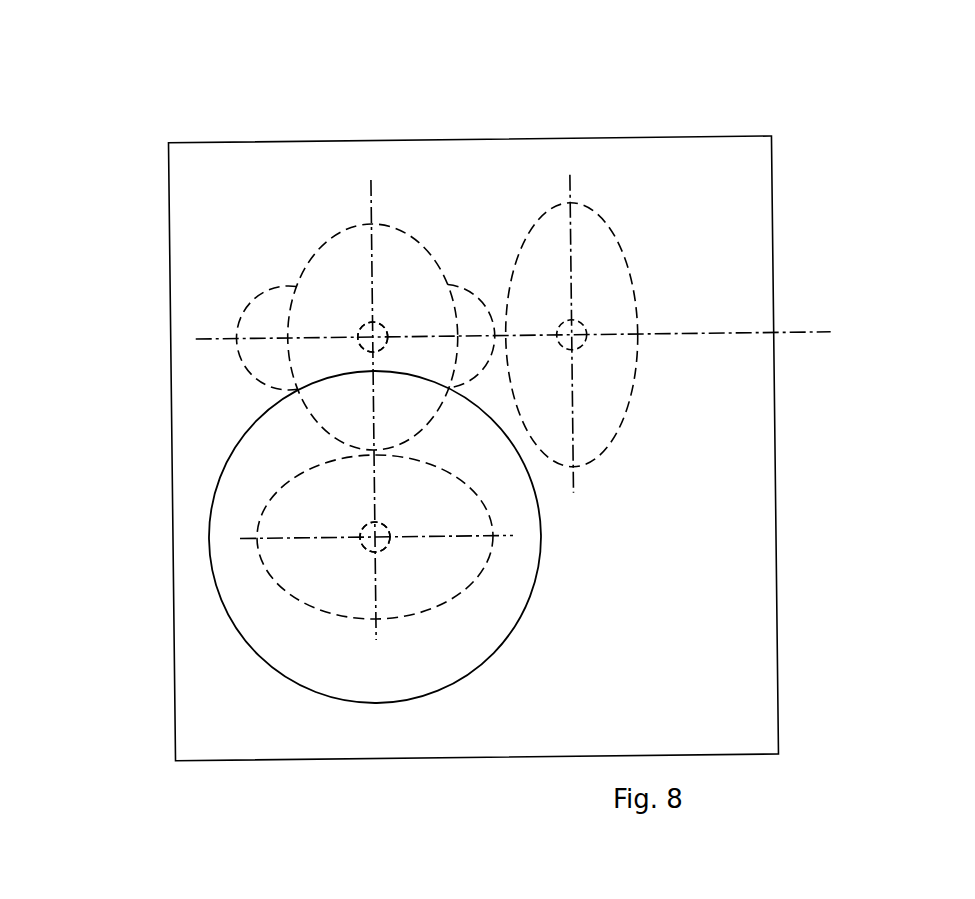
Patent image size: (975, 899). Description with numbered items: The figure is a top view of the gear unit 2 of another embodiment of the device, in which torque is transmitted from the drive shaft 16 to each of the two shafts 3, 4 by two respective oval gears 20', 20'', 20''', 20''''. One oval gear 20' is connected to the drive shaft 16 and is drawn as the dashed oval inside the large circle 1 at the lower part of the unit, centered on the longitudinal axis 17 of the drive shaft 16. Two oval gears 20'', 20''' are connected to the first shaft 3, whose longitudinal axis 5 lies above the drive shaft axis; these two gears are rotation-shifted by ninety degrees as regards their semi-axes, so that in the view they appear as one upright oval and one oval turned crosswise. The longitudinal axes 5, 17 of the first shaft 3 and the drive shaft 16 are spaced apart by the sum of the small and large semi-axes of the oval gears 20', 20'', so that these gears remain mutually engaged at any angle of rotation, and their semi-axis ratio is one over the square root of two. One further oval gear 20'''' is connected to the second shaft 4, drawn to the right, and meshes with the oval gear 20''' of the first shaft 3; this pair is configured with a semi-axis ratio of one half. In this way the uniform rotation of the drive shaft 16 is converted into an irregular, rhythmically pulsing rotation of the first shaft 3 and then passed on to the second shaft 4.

The gear wheel 1 is at (306, 664).
The gear unit 2 is at (477, 263).
The first shaft 3 is at (365, 335).
The second shaft 4 is at (587, 333).
The longitudinal axis of the first shaft 5 is at (365, 340).
The drive shaft 16 is at (362, 531).
The longitudinal axis of the drive shaft 17 is at (365, 542).
The oval gear 20' is at (269, 537).
The oval gear 20'' is at (174, 323).
The oval gear 20''' is at (388, 222).
The oval gear 20'''' is at (701, 368).